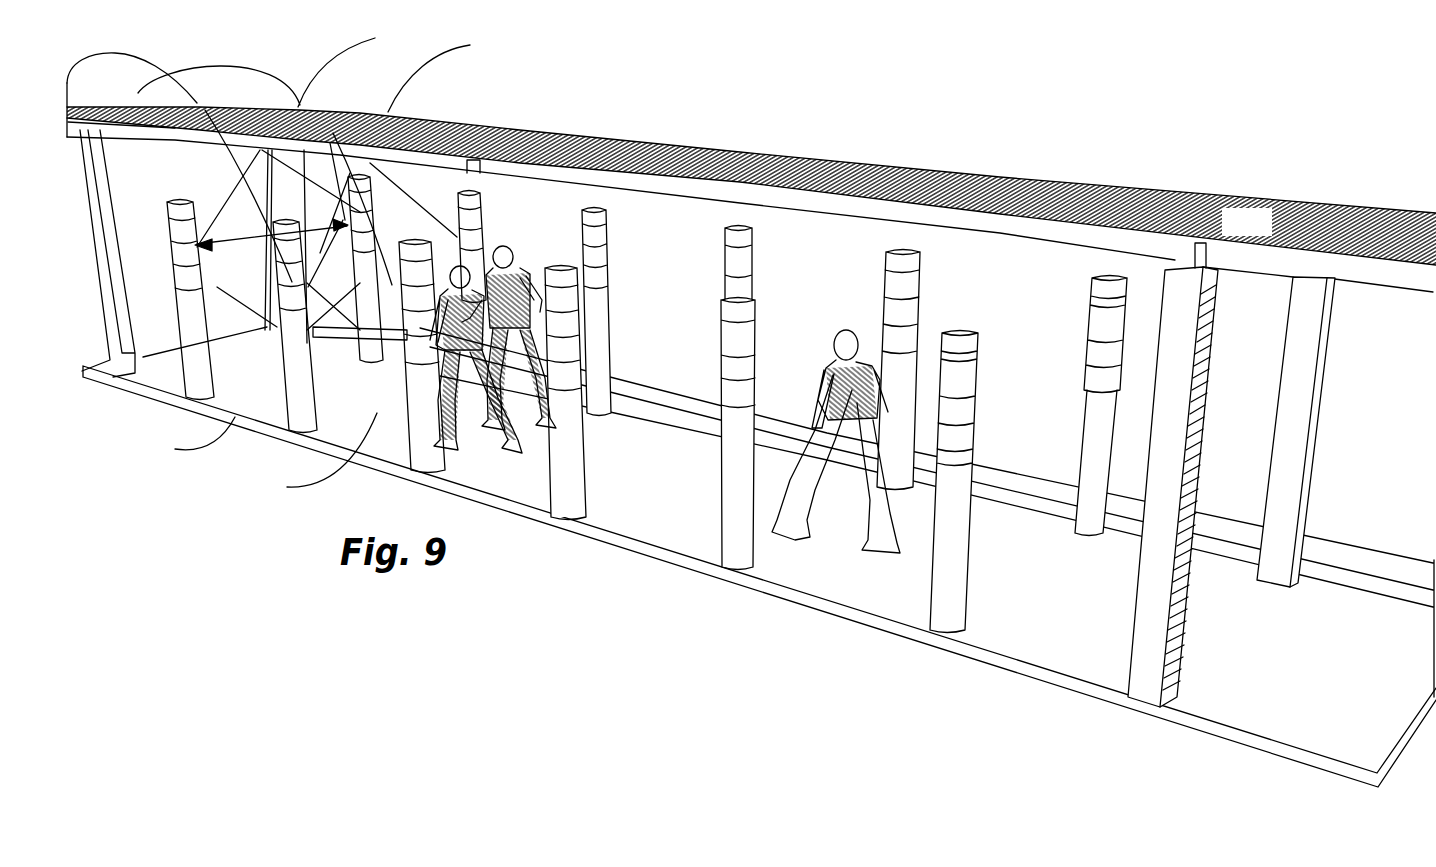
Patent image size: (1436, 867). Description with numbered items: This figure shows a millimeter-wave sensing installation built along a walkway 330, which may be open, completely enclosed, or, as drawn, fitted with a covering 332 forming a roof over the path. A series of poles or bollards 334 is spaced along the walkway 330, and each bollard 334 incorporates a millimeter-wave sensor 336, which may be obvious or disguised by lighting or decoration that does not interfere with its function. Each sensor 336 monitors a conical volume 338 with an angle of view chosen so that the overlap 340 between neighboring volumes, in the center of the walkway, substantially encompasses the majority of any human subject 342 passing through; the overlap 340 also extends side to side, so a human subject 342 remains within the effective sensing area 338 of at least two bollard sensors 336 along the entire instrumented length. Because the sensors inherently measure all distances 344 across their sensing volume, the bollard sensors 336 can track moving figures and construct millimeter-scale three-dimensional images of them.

The walkway 330 is at (759, 576).
The covering 332 is at (751, 187).
The bollard 334 is at (1027, 454).
The millimeter-wave sensor 336 is at (646, 372).
The conical volume 338 is at (277, 262).
The overlap 340 is at (300, 233).
The human subject 342 is at (665, 399).
The distance 344 is at (271, 232).